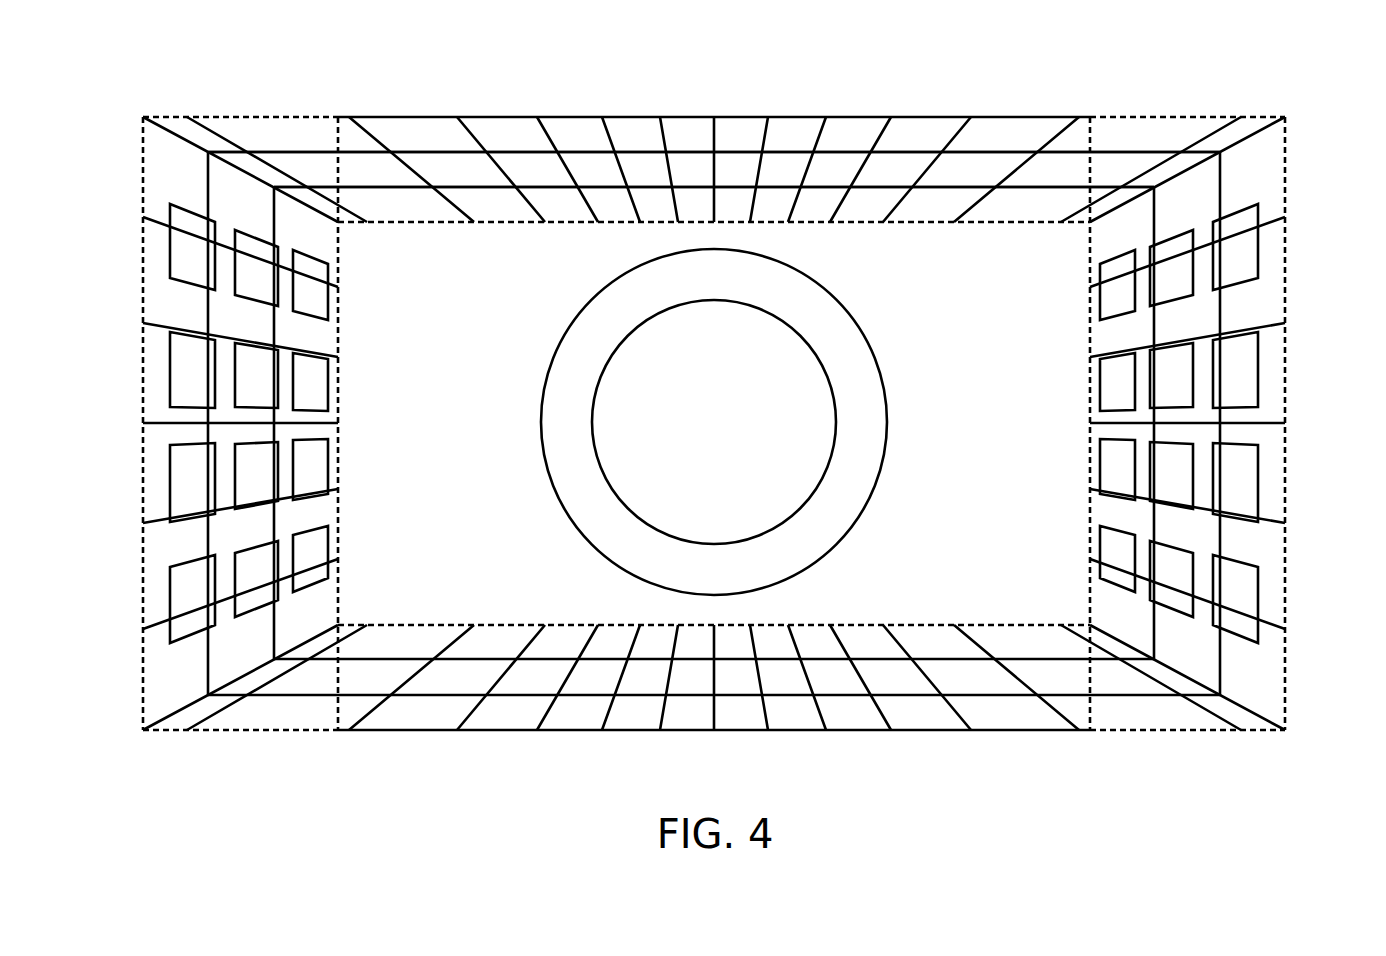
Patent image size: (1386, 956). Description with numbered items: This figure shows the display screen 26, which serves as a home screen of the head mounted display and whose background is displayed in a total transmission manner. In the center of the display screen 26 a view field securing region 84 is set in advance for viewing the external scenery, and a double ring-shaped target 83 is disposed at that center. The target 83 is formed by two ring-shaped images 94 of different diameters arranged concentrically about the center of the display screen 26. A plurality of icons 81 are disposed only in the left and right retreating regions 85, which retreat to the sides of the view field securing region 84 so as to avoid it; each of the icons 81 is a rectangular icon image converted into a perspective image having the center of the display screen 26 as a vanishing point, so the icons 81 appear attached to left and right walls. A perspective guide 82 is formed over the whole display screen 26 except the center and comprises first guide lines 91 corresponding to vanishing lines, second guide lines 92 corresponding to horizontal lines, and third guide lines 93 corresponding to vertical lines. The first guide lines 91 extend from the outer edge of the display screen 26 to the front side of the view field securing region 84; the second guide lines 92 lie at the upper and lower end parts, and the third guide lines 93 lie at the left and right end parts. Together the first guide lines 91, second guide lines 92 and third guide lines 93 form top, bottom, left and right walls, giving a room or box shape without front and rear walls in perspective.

The display screen 26 is at (1196, 106).
The icons 81 is at (193, 482).
The perspective guide 82 is at (997, 140).
The target 83 is at (568, 305).
The view field securing region 84 is at (836, 217).
The retreating regions 85 is at (288, 110).
The first guide lines 91 is at (757, 170).
The second guide lines 92 is at (693, 187).
The third guide lines 93 is at (273, 617).
The ring-shaped images 94 is at (680, 300).